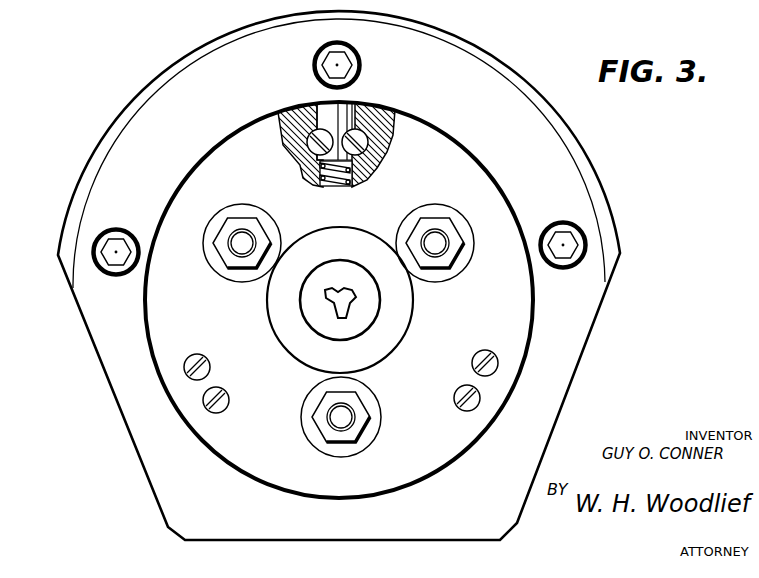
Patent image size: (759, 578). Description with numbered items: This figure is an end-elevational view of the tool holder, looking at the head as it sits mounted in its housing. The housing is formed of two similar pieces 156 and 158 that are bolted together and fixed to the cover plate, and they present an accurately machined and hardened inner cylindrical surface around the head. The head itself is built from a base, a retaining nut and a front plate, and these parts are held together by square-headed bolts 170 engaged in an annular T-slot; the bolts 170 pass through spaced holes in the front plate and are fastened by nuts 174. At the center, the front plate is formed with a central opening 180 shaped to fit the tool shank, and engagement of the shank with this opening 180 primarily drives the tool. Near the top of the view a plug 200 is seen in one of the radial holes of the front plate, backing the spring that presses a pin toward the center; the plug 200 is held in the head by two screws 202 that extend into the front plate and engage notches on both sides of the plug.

The housing piece 156 is at (190, 67).
The housing piece 158 is at (167, 140).
The square-headed bolt 170 is at (437, 245).
The nut 174 is at (452, 258).
The central opening 180 is at (340, 298).
The plug 200 is at (333, 120).
The screw 202 is at (327, 131).